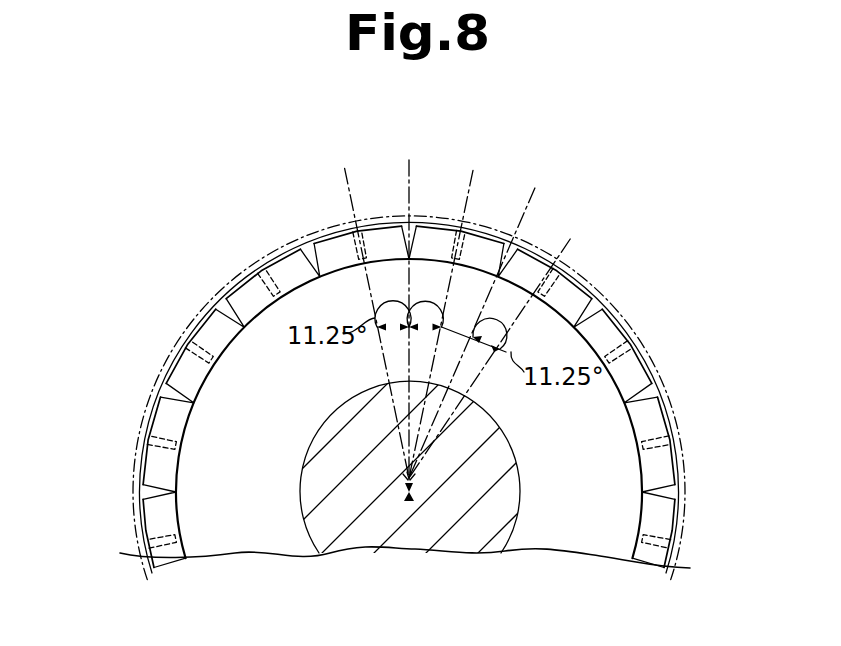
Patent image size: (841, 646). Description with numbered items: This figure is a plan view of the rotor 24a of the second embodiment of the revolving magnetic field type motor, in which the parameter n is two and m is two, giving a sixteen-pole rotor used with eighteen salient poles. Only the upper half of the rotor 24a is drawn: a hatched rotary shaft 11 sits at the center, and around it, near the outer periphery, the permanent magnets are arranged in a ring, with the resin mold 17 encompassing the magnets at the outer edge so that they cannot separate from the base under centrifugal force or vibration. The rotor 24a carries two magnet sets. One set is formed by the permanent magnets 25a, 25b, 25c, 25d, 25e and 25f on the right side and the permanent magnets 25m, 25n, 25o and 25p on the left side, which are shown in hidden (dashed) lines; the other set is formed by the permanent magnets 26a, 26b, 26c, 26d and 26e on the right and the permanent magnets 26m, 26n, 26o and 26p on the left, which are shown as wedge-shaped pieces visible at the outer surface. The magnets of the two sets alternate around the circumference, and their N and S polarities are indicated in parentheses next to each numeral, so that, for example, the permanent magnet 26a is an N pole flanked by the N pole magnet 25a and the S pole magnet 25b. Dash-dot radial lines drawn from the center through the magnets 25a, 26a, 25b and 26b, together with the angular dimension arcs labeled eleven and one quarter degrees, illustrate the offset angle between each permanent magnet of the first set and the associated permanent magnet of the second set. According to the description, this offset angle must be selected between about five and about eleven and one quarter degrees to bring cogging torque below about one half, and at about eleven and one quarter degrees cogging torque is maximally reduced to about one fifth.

The rotary shaft 11 is at (410, 540).
The resin mold 17 is at (677, 573).
The rotor 24a is at (632, 99).
The permanent magnet 25a is at (357, 229).
The permanent magnet 25b is at (463, 229).
The permanent magnet 25c is at (558, 270).
The permanent magnet 25d is at (631, 344).
The permanent magnet 25e is at (670, 441).
The permanent magnet 25f is at (670, 544).
The permanent magnet 25m is at (148, 544).
The permanent magnet 25n is at (148, 440).
The permanent magnet 25o is at (188, 344).
The permanent magnet 25p is at (262, 270).
The permanent magnet 26a is at (412, 222).
The permanent magnet 26b is at (511, 246).
The permanent magnet 26c is at (598, 304).
The permanent magnet 26d is at (655, 390).
The permanent magnet 26e is at (675, 492).
The permanent magnet 26m is at (143, 491).
The permanent magnet 26n is at (164, 390).
The permanent magnet 26o is at (221, 303).
The permanent magnet 26p is at (307, 246).